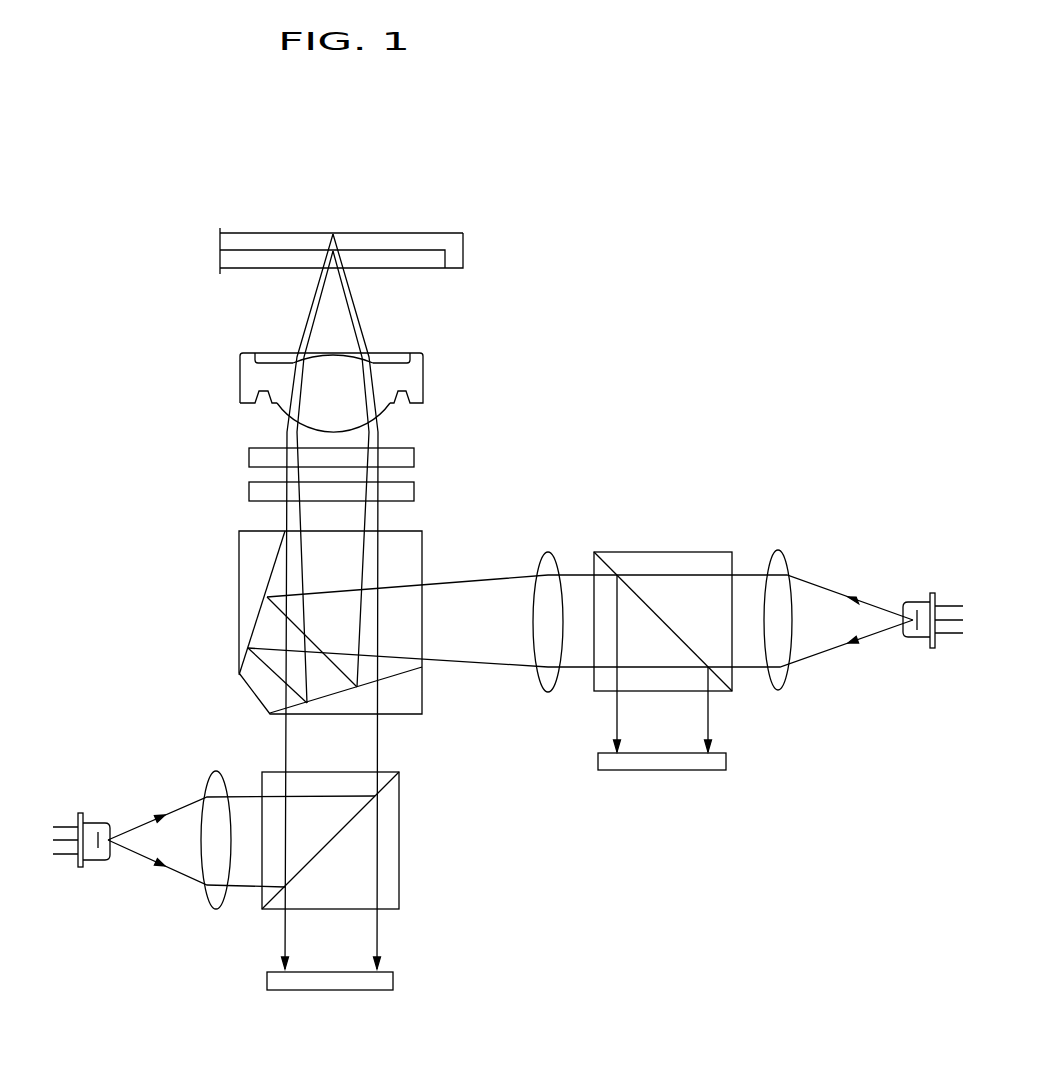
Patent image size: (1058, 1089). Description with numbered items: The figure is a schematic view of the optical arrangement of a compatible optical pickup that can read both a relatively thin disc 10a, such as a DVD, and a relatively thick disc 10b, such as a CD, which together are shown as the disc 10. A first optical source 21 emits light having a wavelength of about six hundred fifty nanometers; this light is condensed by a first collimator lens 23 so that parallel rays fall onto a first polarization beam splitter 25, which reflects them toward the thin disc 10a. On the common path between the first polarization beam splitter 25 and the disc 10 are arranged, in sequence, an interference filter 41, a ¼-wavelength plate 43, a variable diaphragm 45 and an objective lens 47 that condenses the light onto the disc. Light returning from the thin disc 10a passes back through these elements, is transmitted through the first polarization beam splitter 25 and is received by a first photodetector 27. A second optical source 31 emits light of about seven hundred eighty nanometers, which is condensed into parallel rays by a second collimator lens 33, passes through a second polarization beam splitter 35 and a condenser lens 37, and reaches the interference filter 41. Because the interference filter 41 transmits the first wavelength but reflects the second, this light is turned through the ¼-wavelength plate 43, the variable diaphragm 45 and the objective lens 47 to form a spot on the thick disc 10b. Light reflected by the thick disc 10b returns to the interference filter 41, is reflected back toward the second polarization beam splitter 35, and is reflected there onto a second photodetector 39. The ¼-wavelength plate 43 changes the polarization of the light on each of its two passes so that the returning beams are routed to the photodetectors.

The disc 10 is at (478, 228).
The relatively thin disc 10a is at (235, 262).
The relatively thick disc 10b is at (237, 240).
The first optical source 21 is at (93, 861).
The first collimator lens 23 is at (213, 906).
The first polarization beam splitter 25 is at (270, 782).
The first photodetector 27 is at (313, 990).
The second optical source 31 is at (913, 640).
The second collimator lens 33 is at (780, 560).
The second polarization beam splitter 35 is at (667, 563).
The condenser lens 37 is at (552, 557).
The second photodetector 39 is at (655, 763).
The interference filter 41 is at (248, 578).
The ¼-wavelength plate 43 is at (413, 491).
The variable diaphragm 45 is at (413, 455).
The objective lens 47 is at (420, 378).